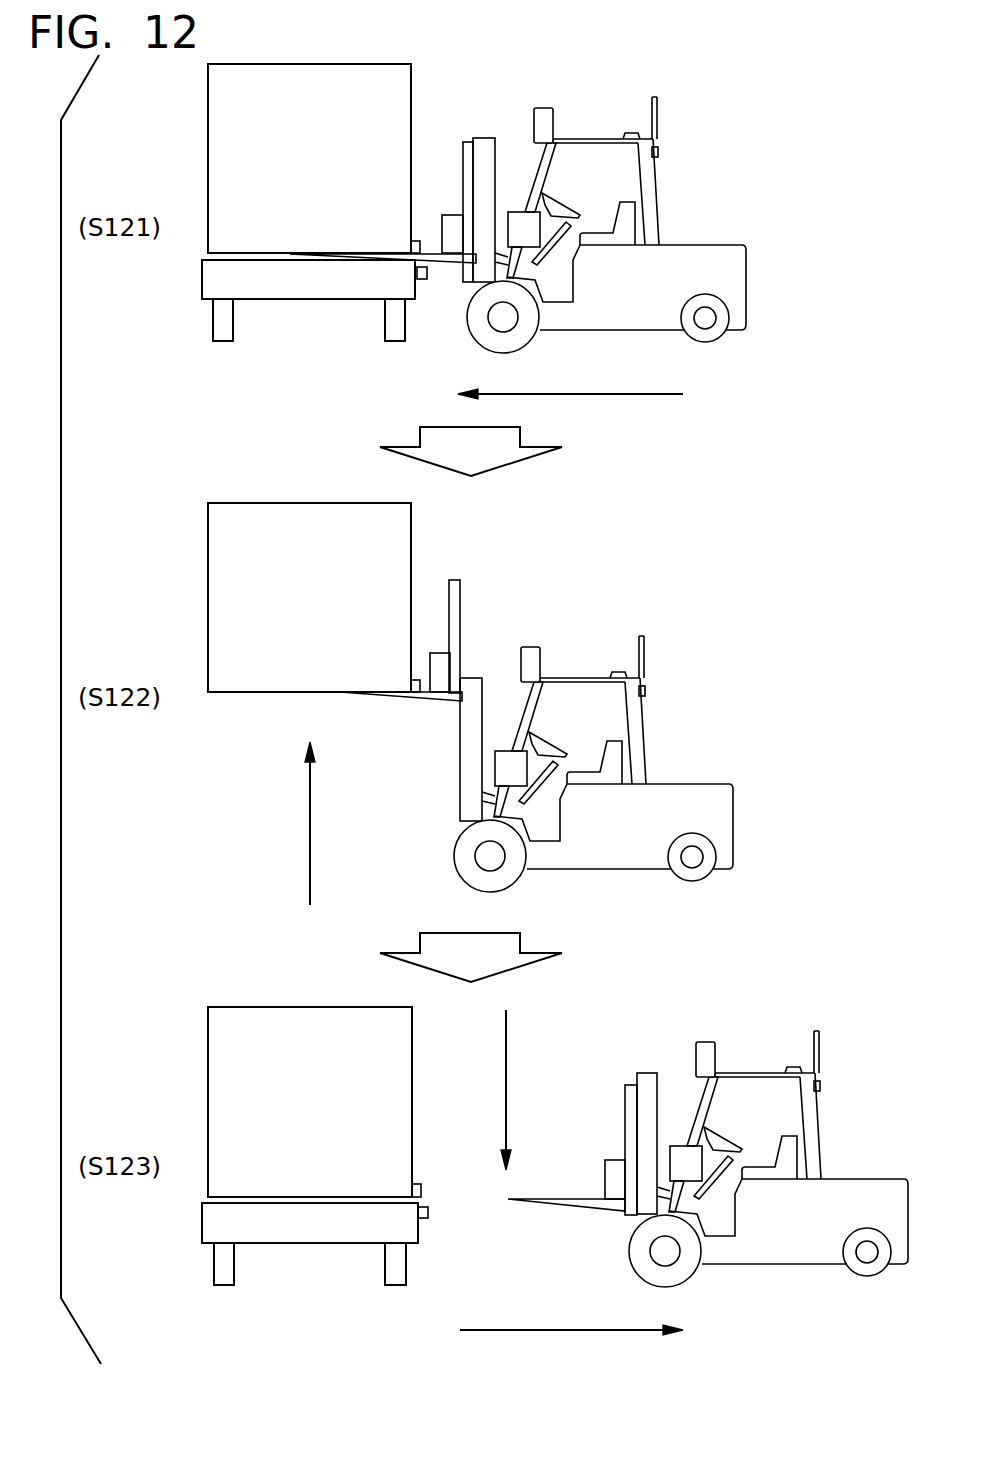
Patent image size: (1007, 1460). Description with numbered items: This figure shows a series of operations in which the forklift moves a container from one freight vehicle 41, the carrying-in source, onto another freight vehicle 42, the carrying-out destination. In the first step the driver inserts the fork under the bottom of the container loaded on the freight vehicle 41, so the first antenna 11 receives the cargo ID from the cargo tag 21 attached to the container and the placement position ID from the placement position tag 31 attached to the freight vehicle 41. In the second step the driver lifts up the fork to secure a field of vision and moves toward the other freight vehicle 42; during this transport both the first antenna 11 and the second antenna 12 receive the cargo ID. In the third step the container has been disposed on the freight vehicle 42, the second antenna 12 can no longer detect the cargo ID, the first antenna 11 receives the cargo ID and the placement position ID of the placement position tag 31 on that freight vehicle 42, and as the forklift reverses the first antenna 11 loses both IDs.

The first antenna 11 is at (455, 263).
The second antenna 12 is at (545, 108).
The cargo tag 21 is at (415, 242).
The placement position tag 31 is at (423, 279).
The freight vehicle 41 is at (310, 300).
The freight vehicle 42 is at (310, 1245).